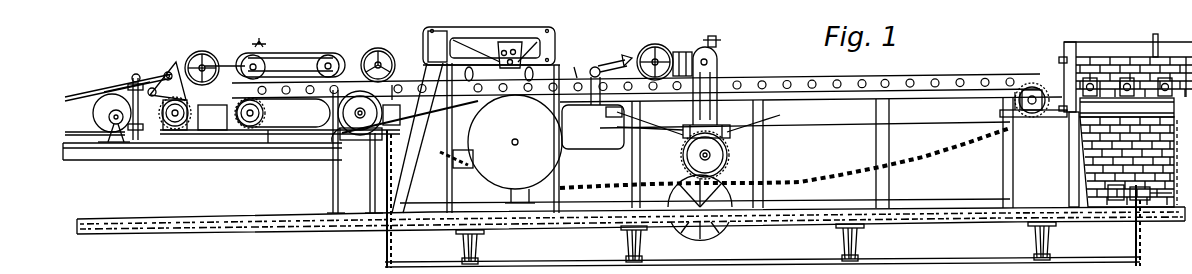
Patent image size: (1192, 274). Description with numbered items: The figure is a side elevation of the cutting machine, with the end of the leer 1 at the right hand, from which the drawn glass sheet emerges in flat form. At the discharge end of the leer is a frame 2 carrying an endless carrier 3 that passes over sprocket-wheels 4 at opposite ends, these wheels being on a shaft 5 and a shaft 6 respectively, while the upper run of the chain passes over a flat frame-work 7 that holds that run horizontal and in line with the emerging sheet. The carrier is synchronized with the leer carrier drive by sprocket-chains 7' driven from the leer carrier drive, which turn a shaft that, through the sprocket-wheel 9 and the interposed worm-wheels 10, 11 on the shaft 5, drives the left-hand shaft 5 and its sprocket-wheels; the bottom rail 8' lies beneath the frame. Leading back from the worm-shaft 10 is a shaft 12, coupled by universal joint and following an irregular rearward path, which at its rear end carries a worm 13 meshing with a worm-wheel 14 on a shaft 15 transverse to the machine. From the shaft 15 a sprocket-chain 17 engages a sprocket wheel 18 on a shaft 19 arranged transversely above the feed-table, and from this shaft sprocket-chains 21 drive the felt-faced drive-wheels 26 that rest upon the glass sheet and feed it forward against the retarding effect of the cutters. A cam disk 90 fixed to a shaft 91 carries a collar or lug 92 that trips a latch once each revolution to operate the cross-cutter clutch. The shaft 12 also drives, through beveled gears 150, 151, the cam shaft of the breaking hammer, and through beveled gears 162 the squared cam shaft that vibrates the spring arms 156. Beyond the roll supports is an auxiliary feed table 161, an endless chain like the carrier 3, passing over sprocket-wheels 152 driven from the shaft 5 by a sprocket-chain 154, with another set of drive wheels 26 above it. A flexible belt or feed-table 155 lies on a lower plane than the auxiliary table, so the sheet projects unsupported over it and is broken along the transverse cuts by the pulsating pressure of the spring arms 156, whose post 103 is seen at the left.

The leer 1 is at (1103, 48).
The frame 2 is at (888, 154).
The endless carrier 3 is at (849, 89).
The sprocket-wheels 4 is at (1010, 102).
The shaft 5 is at (372, 113).
The shaft 6 is at (1033, 112).
The flat frame-work 7 is at (811, 149).
The sprocket-chains 7' is at (1140, 225).
The bottom rail 8' is at (762, 265).
The sprocket-wheel 9 is at (385, 259).
The worm-wheel 10 is at (368, 138).
The worm-wheel 11 is at (393, 86).
The shaft 12 is at (678, 118).
The worm 13 is at (740, 129).
The worm-wheel 14 is at (740, 141).
The shaft 15 is at (700, 155).
The sprocket-chain 17 is at (720, 104).
The sprocket wheel 18 is at (719, 63).
The shaft 19 is at (716, 46).
The sprocket-chains 21 is at (673, 50).
The drive-wheels 26 is at (205, 54).
The cam disk 90 is at (515, 149).
The shaft 91 is at (517, 140).
The collar or lug 92 is at (453, 152).
The support post 103 is at (143, 133).
The beveled gears 150 is at (330, 147).
The beveled gears 151 is at (282, 113).
The sprocket-wheels 152 is at (182, 125).
The sprocket-chain 154 is at (273, 130).
The flexible belt or feed-table 155 is at (66, 98).
The spring arms 156 is at (123, 88).
The auxiliary feed table 161 is at (155, 133).
The beveled gears 162 is at (143, 73).